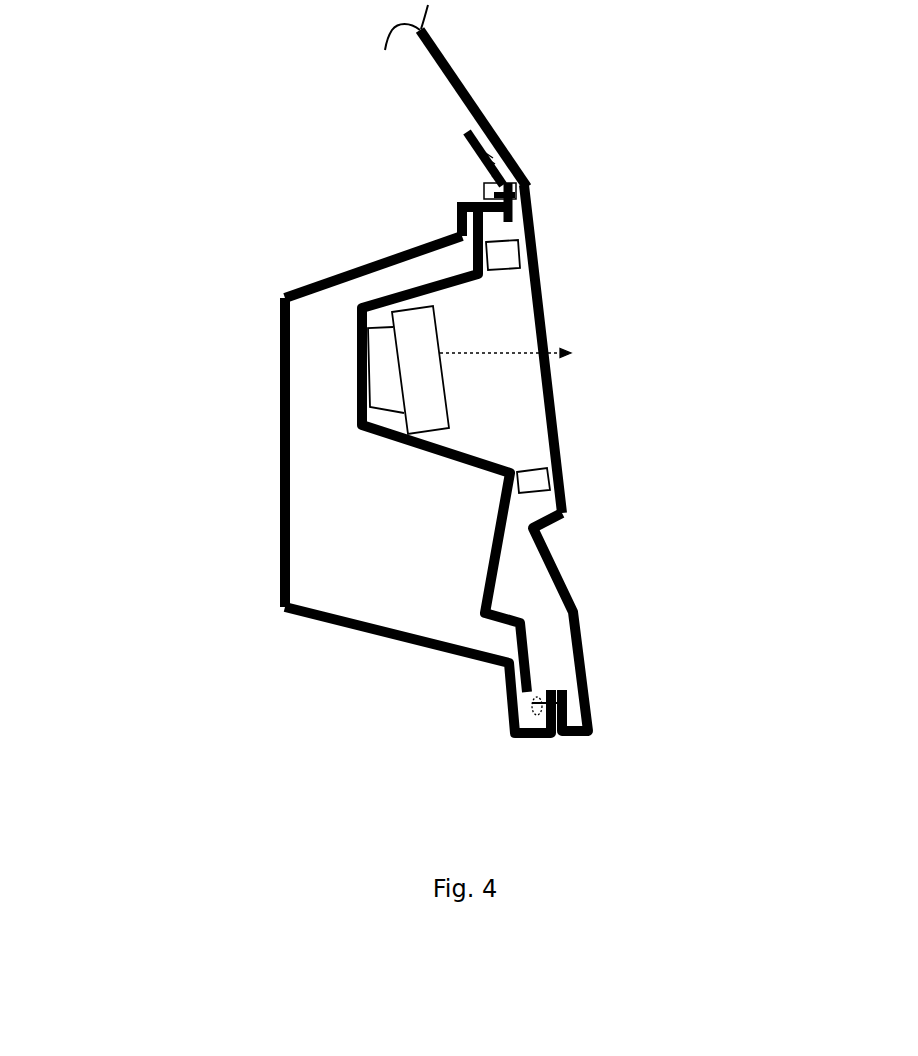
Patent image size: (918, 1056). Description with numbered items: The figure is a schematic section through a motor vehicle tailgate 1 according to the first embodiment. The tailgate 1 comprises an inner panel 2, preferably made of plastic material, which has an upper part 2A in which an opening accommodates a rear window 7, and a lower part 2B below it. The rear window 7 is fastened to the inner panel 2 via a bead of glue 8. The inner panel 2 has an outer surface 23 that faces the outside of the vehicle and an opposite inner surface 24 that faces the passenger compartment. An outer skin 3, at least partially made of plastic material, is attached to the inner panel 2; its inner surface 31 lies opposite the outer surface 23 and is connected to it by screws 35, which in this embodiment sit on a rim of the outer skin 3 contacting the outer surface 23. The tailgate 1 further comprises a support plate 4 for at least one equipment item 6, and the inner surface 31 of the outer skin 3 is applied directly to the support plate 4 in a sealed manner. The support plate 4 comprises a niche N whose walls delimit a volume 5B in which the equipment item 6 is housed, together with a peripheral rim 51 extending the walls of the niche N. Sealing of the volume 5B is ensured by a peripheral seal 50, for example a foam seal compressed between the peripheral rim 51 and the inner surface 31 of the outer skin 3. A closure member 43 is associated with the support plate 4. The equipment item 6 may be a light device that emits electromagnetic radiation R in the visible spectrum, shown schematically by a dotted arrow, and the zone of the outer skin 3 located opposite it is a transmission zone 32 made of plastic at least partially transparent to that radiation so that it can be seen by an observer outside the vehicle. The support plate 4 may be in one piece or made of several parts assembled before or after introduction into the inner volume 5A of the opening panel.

The tailgate 1 is at (205, 232).
The inner panel 2 is at (340, 644).
The upper part of the inner panel 2A is at (366, 102).
The lower part of the inner panel 2B is at (249, 466).
The outer skin 3 is at (531, 245).
The support plate 4 is at (428, 446).
The inner volume 5A is at (447, 613).
The volume 5B is at (514, 322).
The equipment item 6 is at (417, 327).
The rear window 7 is at (456, 80).
The bead of glue 8 is at (506, 156).
The outer surface of the inner panel 23 is at (437, 275).
The inner surface of the inner panel 24 is at (280, 333).
The inner surface of the outer skin 31 is at (542, 555).
The transmission zone 32 is at (576, 427).
The screws 35 is at (489, 186).
The closure member 43 is at (358, 355).
The peripheral seal 50 is at (533, 483).
The peripheral rim 51 is at (540, 655).
The electromagnetic radiation R is at (487, 388).
The niche N is at (470, 446).